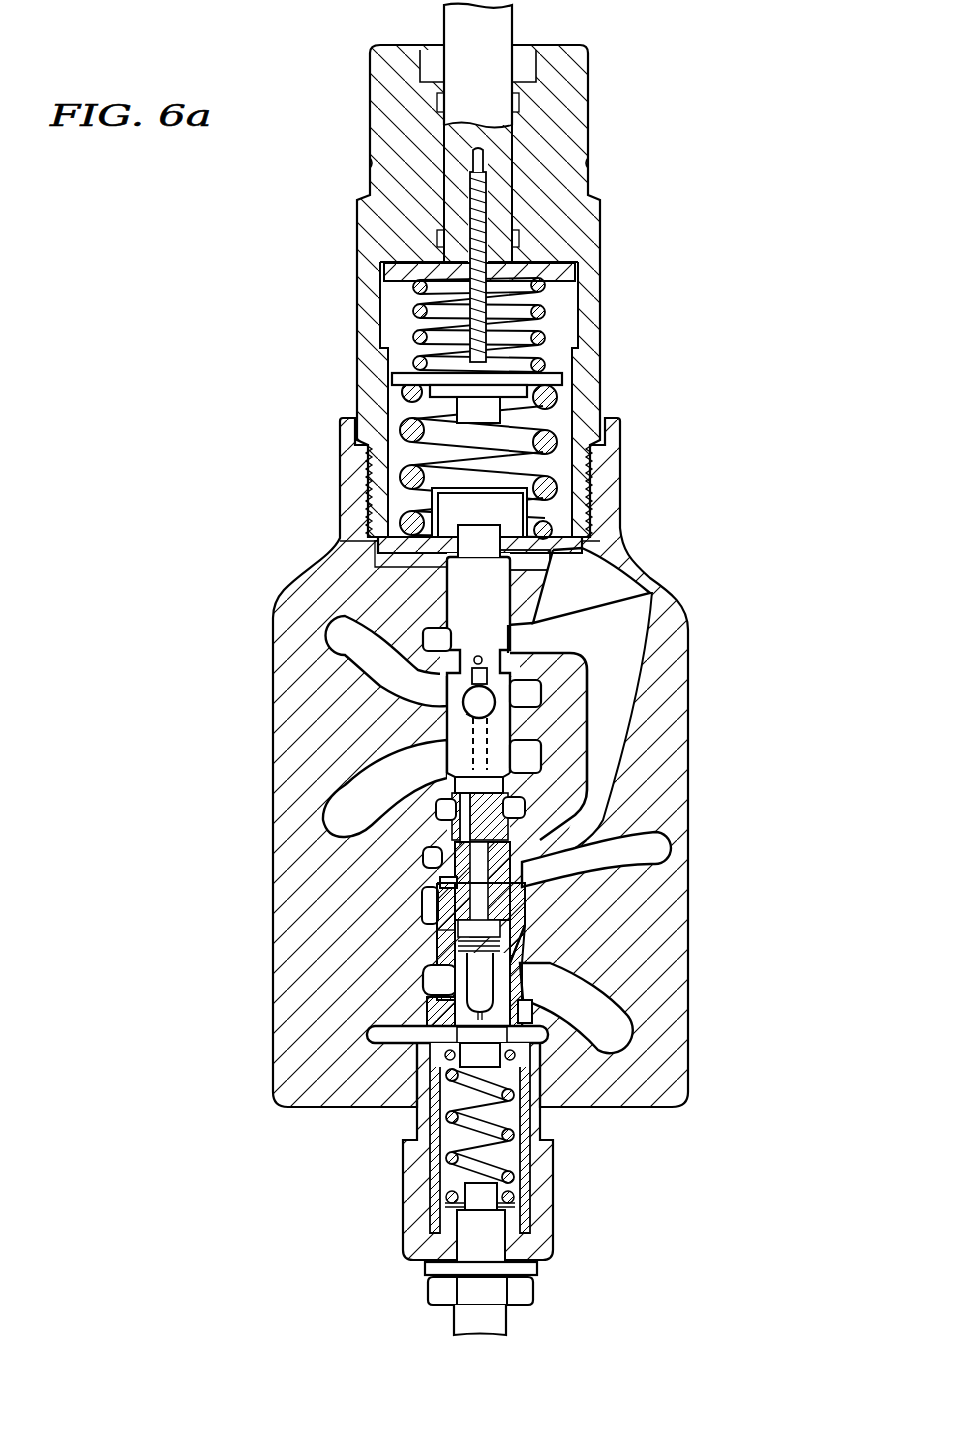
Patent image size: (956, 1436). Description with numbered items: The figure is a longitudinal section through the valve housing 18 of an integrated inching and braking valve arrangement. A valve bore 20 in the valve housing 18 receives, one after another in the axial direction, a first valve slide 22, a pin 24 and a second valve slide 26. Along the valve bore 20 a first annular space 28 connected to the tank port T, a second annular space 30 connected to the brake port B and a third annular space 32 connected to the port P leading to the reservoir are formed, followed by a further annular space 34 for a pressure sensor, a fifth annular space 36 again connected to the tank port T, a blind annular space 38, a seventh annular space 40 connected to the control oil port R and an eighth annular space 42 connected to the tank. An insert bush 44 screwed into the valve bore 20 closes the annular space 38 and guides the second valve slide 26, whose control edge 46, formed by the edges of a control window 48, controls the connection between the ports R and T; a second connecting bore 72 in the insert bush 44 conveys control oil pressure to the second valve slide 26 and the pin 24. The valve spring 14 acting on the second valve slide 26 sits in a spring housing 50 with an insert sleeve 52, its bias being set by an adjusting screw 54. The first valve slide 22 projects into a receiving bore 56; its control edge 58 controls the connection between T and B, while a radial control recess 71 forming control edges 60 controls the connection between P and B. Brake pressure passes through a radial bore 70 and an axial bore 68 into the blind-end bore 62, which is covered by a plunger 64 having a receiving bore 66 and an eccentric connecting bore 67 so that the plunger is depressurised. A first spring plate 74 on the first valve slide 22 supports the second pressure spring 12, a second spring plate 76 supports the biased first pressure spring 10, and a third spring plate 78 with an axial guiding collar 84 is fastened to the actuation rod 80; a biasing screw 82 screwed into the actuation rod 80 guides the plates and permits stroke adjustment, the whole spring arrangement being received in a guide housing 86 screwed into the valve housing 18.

The first pressure spring 10 is at (418, 310).
The second pressure spring 12 is at (560, 392).
The valve spring 14 is at (507, 1132).
The valve housing 18 is at (273, 955).
The valve bore 20 is at (508, 850).
The first valve slide 22 is at (505, 591).
The pin 24 is at (483, 905).
The second valve slide 26 is at (490, 978).
The first annular space 28 is at (430, 630).
The second annular space 30 is at (530, 685).
The third annular space 32 is at (530, 750).
The annular space 34 is at (515, 813).
The fifth annular space 36 is at (440, 870).
The annular space 38 is at (428, 915).
The seventh annular space 40 is at (440, 955).
The eighth annular space 42 is at (370, 1033).
The insert bush 44 is at (432, 995).
The control edge 46 is at (445, 1015).
The control window 48 is at (522, 1016).
The spring housing 50 is at (563, 1168).
The insert sleeve 52 is at (530, 1222).
The adjusting screw 54 is at (510, 1318).
The receiving bore 56 is at (372, 572).
The control edge 58 is at (515, 646).
The control edges 60 is at (462, 706).
The blind-end bore 62 is at (500, 782).
The plunger 64 is at (462, 830).
The receiving bore 66 is at (432, 860).
The connecting bore 67 is at (440, 812).
The axial bore 68 is at (490, 732).
The radial bore 70 is at (477, 655).
The control recess 71 is at (476, 702).
The second connecting bore 72 is at (526, 950).
The first spring plate 74 is at (604, 530).
The second spring plate 76 is at (563, 376).
The third spring plate 78 is at (568, 270).
The actuation rod 80 is at (505, 30).
The biasing screw 82 is at (488, 226).
The axial guiding collar 84 is at (565, 305).
The guide housing 86 is at (582, 65).
The brake port B is at (342, 660).
The port P is at (343, 797).
The tank port T is at (652, 606).
The control oil port R is at (618, 1025).